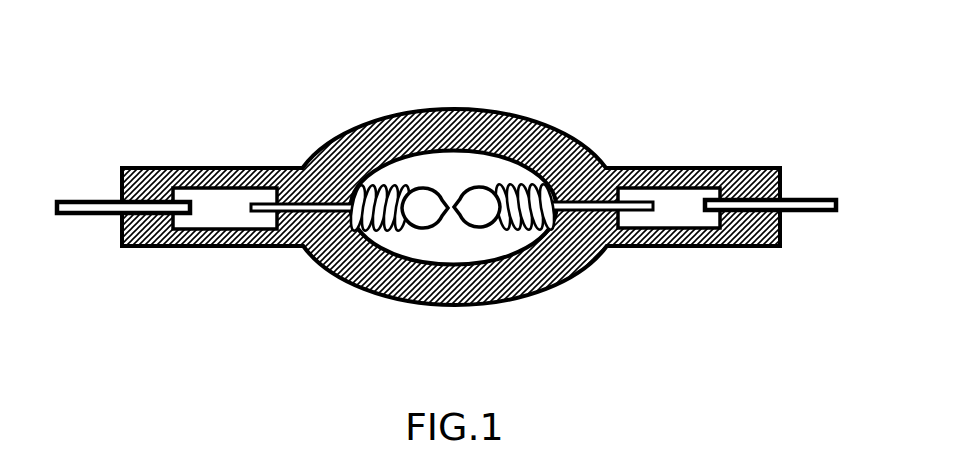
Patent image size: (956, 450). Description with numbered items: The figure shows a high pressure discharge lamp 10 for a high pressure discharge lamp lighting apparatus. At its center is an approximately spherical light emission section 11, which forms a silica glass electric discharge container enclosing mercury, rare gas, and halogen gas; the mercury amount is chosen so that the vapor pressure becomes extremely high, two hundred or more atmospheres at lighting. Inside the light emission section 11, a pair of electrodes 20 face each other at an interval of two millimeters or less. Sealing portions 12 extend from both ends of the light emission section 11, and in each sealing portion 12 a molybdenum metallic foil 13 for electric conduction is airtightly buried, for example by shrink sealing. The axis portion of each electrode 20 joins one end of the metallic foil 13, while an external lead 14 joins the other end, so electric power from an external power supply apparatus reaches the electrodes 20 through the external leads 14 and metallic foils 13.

The high pressure discharge lamp 10 is at (548, 120).
The light emission section 11 is at (460, 312).
The sealing portion 12 is at (215, 257).
The metallic foil 13 is at (209, 196).
The external lead 14 is at (86, 199).
The electrode 20 is at (387, 172).